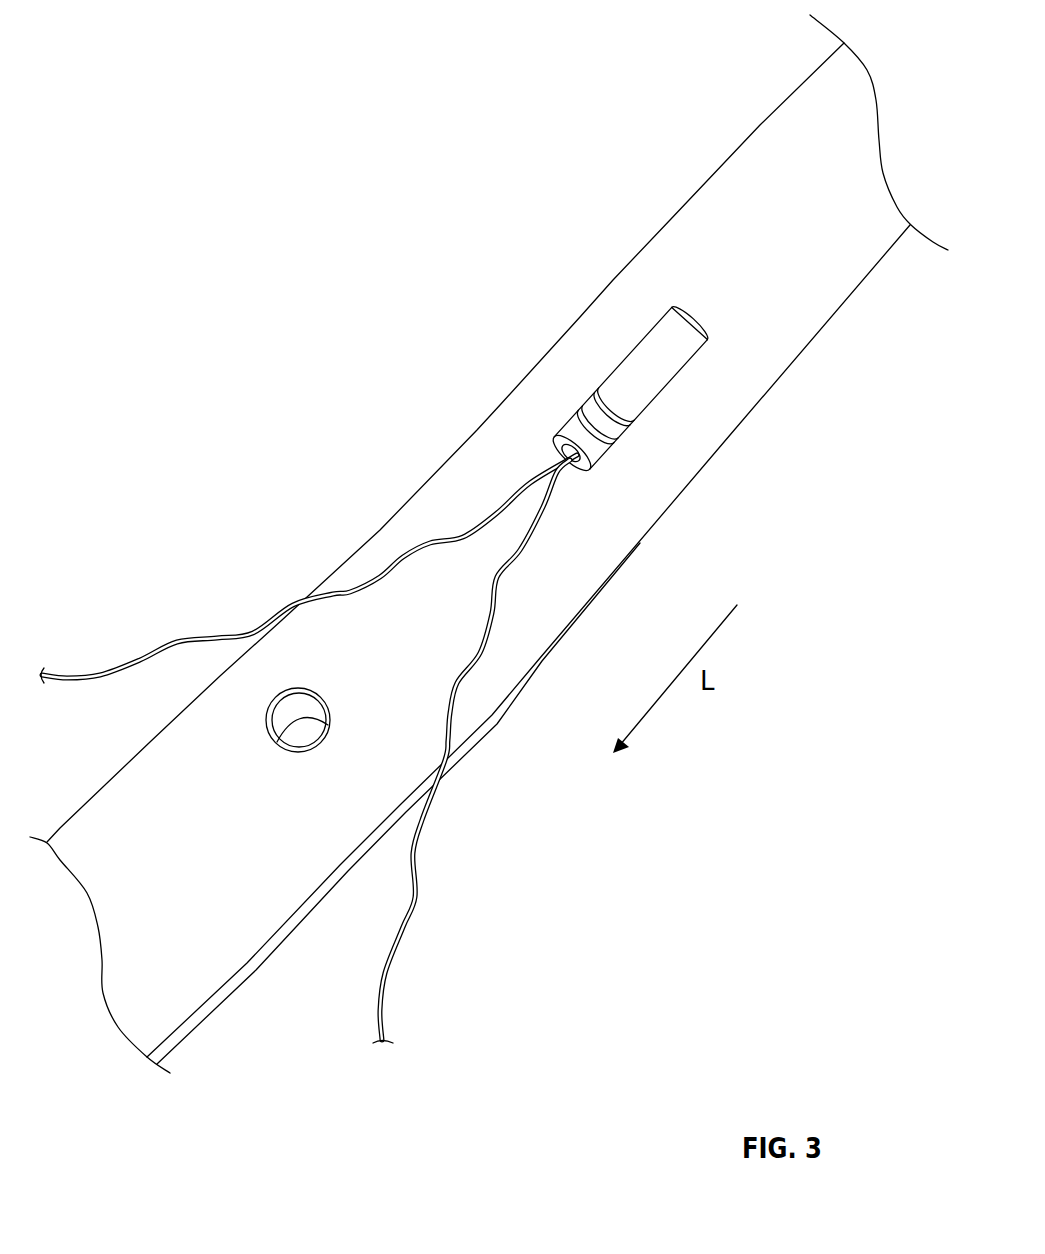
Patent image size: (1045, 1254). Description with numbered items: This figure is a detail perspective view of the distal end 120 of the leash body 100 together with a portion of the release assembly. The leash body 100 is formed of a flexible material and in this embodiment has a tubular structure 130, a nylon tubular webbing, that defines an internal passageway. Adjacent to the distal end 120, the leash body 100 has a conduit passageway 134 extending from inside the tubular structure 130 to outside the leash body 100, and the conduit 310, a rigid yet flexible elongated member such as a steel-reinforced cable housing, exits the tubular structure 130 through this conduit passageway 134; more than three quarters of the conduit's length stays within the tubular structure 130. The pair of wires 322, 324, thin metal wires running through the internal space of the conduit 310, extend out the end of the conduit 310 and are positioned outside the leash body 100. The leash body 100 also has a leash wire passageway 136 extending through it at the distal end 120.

The leash body 100 is at (606, 277).
The distal end 120 is at (368, 790).
The tubular structure 130 is at (810, 277).
The conduit passageway 134 is at (692, 311).
The leash wire passageway 136 is at (283, 716).
The conduit 310 is at (684, 344).
The wire 322 is at (206, 637).
The wire 324 is at (388, 988).